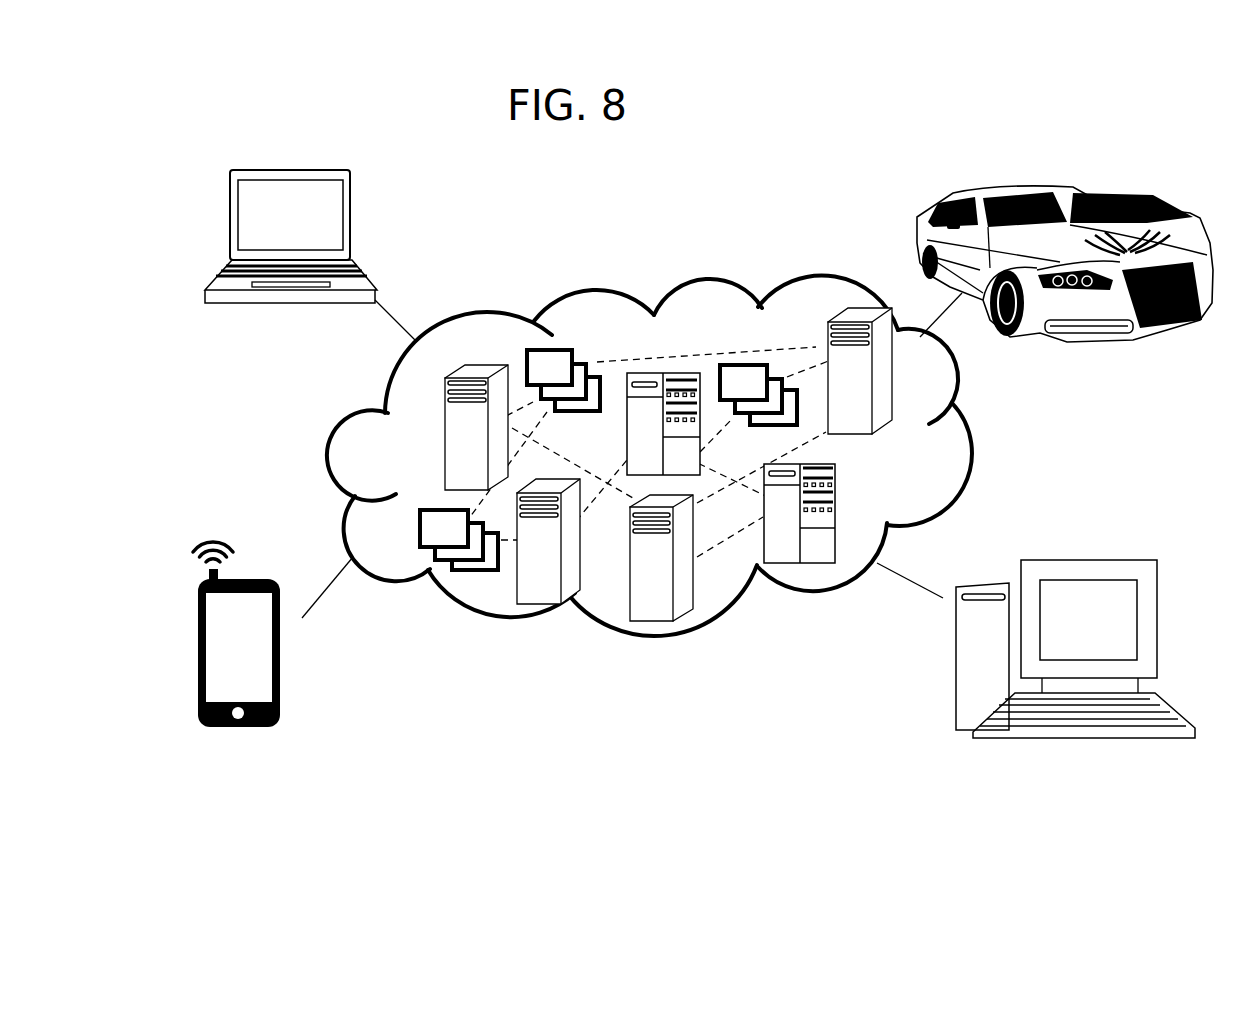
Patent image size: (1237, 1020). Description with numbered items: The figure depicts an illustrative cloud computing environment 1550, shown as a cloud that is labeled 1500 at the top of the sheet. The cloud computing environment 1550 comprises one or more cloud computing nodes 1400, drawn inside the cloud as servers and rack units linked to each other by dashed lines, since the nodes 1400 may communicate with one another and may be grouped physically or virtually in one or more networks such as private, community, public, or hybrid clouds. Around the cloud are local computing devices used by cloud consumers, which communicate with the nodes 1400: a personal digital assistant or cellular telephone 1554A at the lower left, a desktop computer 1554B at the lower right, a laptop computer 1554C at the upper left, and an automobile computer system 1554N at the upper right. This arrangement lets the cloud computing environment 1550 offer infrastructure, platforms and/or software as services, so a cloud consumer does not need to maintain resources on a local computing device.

The cloud computing environment 1500 is at (1093, 120).
The cloud computing environment 1550 is at (972, 438).
The cloud computing node 1400 is at (902, 453).
The personal digital assistant (PDA) or cellular telephone 1554A is at (303, 680).
The desktop computer 1554B is at (980, 652).
The laptop computer 1554C is at (363, 242).
The automobile computer system 1554N is at (907, 222).